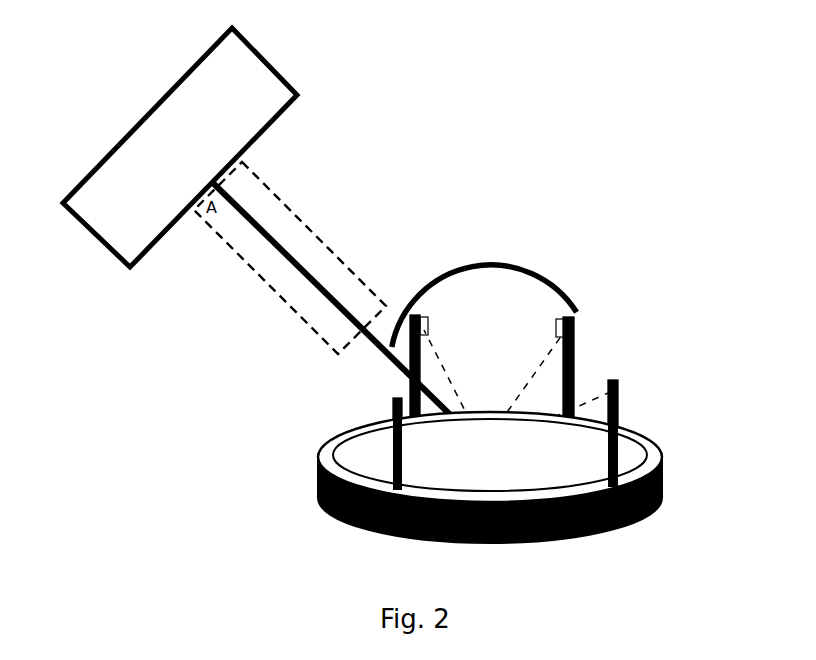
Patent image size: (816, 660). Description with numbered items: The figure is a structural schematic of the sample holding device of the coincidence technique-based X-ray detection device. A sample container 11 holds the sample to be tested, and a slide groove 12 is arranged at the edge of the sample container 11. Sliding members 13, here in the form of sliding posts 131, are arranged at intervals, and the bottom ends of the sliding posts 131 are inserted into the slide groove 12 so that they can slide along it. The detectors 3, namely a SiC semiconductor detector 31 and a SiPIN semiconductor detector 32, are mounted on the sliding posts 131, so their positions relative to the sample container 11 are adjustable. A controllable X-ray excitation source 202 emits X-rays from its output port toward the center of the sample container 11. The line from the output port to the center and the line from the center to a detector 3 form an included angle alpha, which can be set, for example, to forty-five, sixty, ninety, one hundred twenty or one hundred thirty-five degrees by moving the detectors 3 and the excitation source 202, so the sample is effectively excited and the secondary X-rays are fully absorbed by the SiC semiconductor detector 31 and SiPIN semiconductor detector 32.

The controllable X-ray excitation source 202 is at (238, 110).
The sliding member 13 is at (484, 277).
The sliding post 131 is at (563, 360).
The detector 3 is at (461, 376).
The SiC semiconductor detector 31 is at (410, 324).
The SiPIN semiconductor detector 32 is at (605, 382).
The slide groove 12 is at (320, 453).
The sample container 11 is at (322, 503).